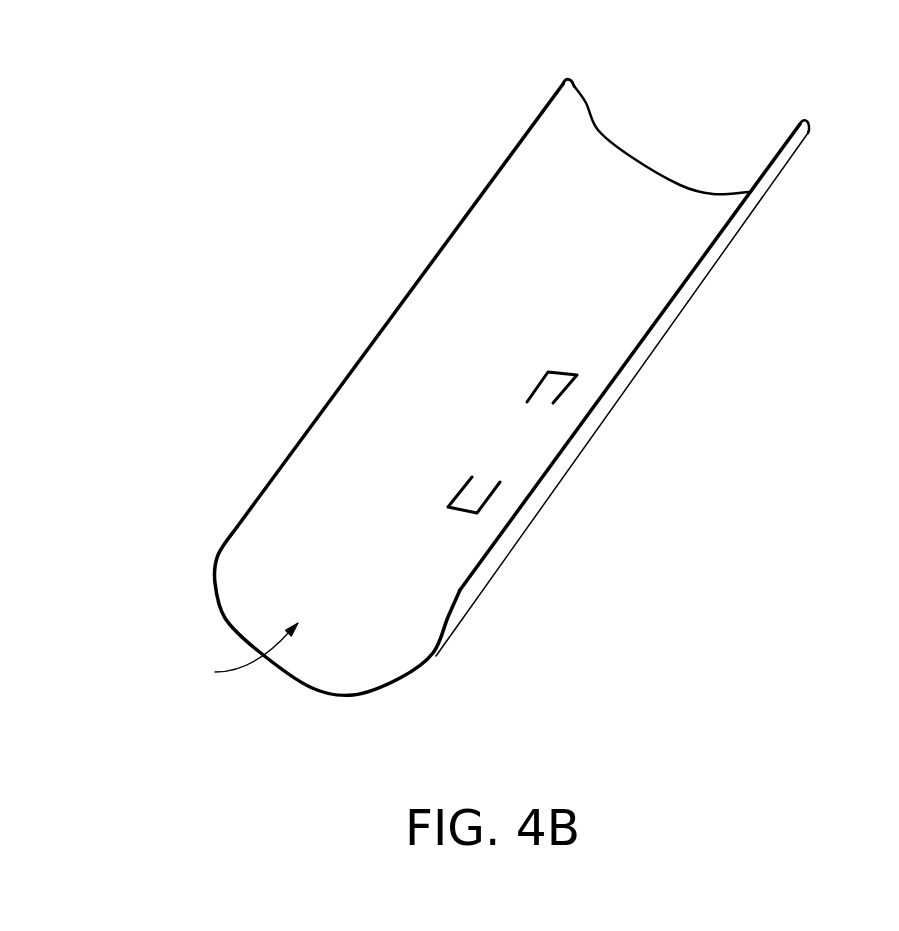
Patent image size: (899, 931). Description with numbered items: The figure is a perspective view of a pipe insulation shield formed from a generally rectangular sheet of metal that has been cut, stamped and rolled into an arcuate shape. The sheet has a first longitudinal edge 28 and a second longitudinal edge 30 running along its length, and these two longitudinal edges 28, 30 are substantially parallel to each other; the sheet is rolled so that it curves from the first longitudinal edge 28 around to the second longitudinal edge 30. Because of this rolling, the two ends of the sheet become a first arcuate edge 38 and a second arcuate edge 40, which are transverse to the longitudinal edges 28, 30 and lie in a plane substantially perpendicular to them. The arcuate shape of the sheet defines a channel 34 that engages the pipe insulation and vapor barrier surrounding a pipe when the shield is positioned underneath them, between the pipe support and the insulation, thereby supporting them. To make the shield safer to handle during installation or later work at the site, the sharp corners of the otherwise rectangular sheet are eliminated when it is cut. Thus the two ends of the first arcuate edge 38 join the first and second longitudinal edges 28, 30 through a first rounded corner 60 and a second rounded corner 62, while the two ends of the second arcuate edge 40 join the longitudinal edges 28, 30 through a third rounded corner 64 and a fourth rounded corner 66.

The first longitudinal edge 28 is at (405, 292).
The second longitudinal edge 30 is at (772, 160).
The channel 34 is at (238, 664).
The first arcuate edge 38 is at (593, 116).
The second arcuate edge 40 is at (308, 688).
The first rounded corner 60 is at (568, 77).
The second rounded corner 62 is at (805, 120).
The third rounded corner 64 is at (226, 548).
The fourth rounded corner 66 is at (458, 595).